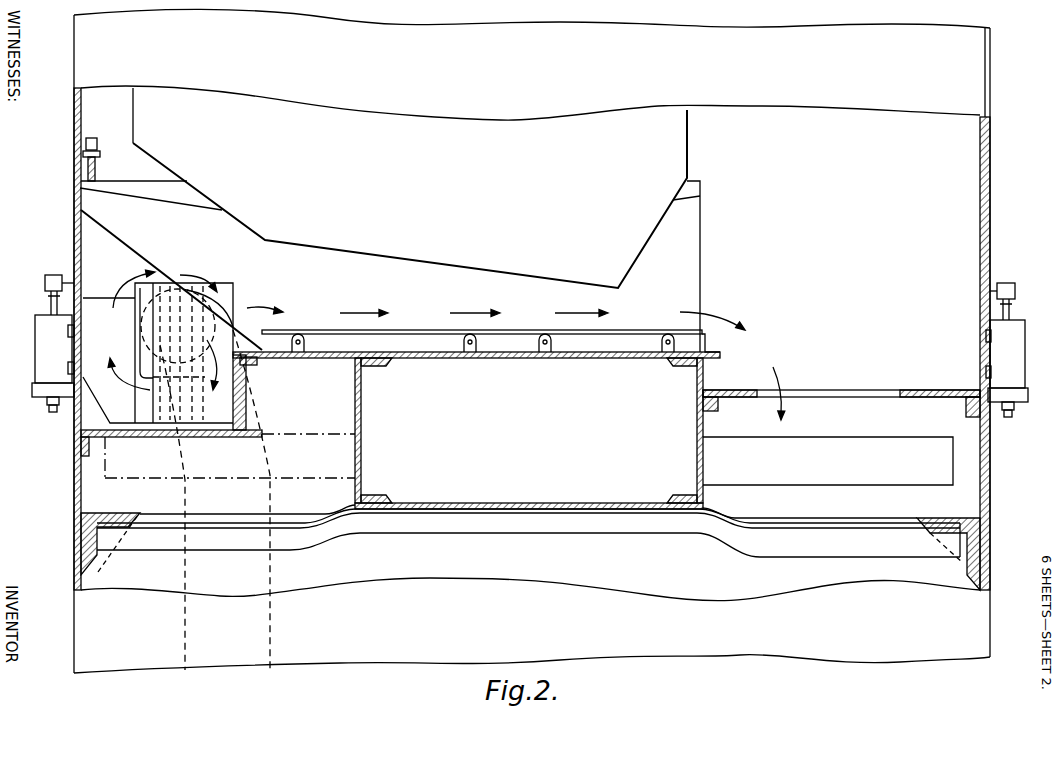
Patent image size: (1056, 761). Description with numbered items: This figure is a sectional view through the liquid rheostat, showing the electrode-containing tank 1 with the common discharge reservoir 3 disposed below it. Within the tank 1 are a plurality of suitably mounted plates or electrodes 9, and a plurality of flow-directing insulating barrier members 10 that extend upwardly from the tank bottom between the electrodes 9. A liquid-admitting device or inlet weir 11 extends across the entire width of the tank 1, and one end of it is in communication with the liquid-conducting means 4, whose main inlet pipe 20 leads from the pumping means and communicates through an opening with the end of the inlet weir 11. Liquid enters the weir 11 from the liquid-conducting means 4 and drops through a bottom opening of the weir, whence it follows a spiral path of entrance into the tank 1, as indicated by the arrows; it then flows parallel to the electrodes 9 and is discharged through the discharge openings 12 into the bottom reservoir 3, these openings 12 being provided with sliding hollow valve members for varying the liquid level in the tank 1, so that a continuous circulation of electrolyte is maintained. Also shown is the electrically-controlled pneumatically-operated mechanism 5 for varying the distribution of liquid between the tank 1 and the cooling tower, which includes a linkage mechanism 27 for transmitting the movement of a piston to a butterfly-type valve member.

The electrode-containing tank 1 is at (92, 238).
The common discharge reservoir 3 is at (530, 560).
The liquid-conducting means 4 is at (152, 287).
The electrically-controlled pneumatically-operated mechanism 5 is at (45, 395).
The electrodes 9 is at (676, 150).
The flow-directing insulating barrier members 10 is at (690, 265).
The inlet weir 11 is at (112, 302).
The discharge openings 12 is at (845, 391).
The main inlet pipe 20 is at (270, 628).
The linkage mechanism 27 is at (50, 297).